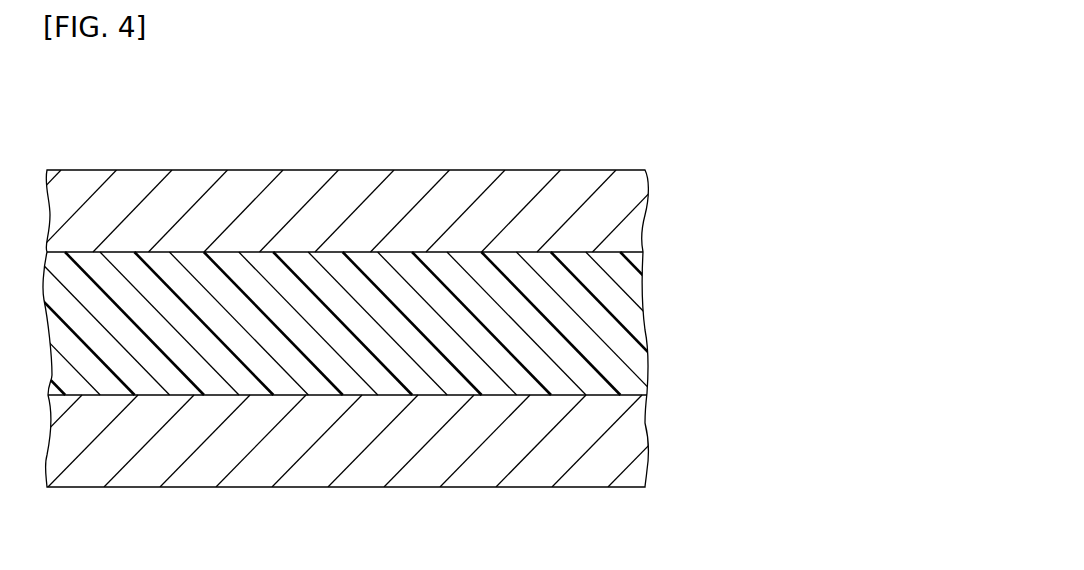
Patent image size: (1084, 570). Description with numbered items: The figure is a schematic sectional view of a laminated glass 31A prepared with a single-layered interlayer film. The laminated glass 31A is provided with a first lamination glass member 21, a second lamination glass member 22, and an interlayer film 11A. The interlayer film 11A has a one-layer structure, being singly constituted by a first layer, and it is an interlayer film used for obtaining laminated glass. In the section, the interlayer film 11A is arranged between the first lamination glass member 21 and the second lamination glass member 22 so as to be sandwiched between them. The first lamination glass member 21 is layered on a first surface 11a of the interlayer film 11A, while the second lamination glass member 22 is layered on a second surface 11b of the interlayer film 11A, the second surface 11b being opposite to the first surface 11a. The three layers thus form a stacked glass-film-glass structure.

The laminated glass 31A is at (176, 133).
The second lamination glass member 22 is at (645, 200).
The first lamination glass member 21 is at (645, 423).
The interlayer film 11A is at (268, 251).
The second surface 11b is at (358, 251).
The first surface 11a is at (358, 395).